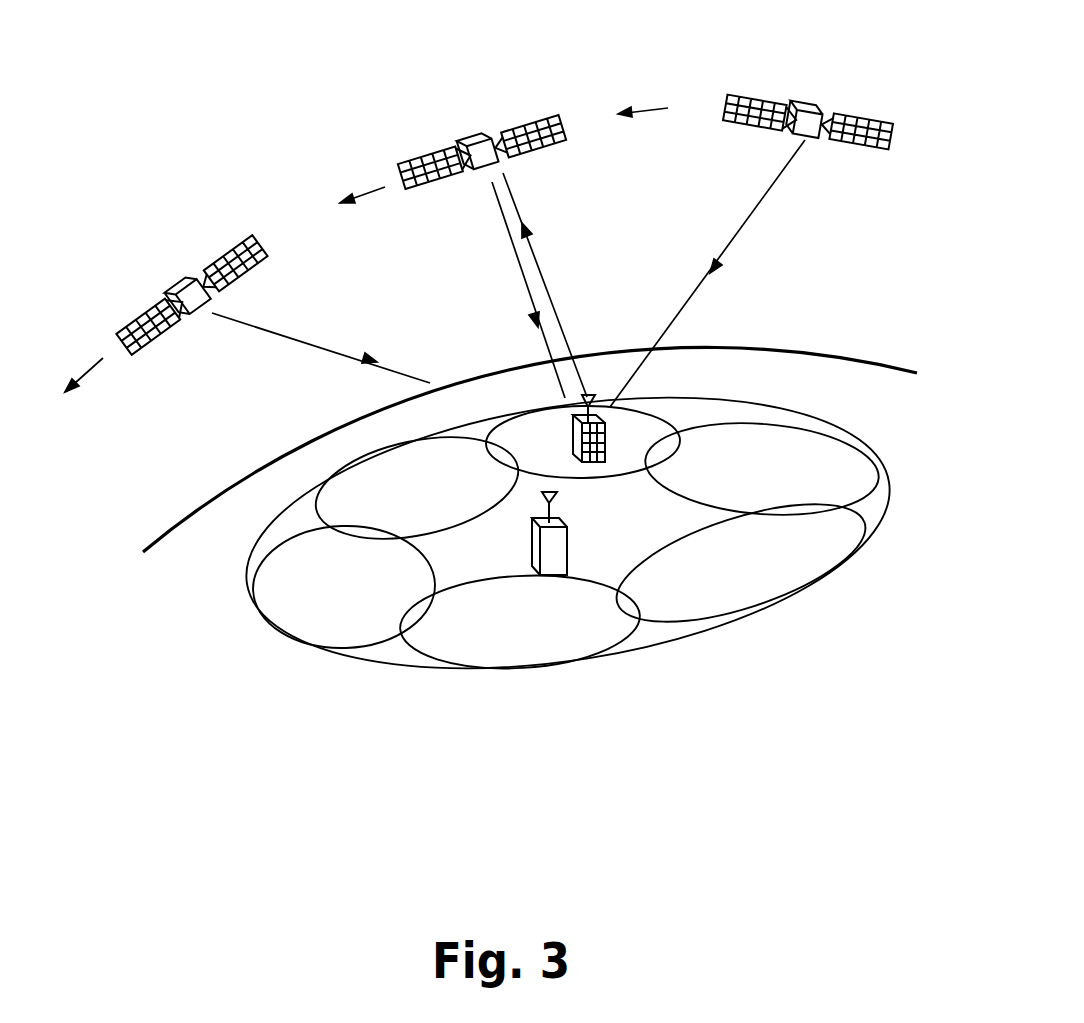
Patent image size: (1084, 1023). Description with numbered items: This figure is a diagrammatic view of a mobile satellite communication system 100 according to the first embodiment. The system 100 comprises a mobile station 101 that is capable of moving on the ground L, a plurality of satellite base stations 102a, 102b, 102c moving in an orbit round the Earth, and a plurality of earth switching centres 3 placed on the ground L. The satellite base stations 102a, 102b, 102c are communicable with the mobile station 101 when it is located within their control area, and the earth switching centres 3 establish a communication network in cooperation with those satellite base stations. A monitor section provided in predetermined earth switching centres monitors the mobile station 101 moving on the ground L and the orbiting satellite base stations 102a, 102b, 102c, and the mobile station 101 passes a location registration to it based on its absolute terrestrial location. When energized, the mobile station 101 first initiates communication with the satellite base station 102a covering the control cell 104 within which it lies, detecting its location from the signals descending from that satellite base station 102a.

The mobile satellite communication system 100 is at (300, 703).
The mobile station 101 is at (623, 433).
The satellite base station 102a is at (483, 127).
The satellite base station 102b is at (812, 100).
The satellite base station 102c is at (188, 263).
The control cell 104 is at (670, 640).
The earth switching centre 3 is at (568, 542).
The ground L is at (803, 365).